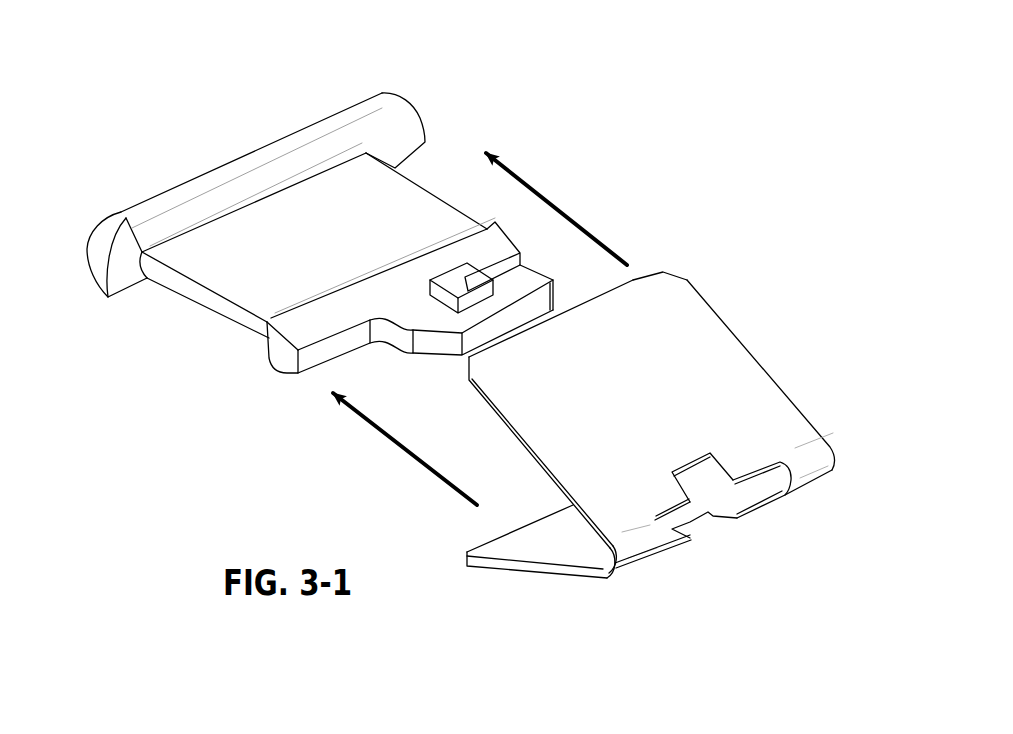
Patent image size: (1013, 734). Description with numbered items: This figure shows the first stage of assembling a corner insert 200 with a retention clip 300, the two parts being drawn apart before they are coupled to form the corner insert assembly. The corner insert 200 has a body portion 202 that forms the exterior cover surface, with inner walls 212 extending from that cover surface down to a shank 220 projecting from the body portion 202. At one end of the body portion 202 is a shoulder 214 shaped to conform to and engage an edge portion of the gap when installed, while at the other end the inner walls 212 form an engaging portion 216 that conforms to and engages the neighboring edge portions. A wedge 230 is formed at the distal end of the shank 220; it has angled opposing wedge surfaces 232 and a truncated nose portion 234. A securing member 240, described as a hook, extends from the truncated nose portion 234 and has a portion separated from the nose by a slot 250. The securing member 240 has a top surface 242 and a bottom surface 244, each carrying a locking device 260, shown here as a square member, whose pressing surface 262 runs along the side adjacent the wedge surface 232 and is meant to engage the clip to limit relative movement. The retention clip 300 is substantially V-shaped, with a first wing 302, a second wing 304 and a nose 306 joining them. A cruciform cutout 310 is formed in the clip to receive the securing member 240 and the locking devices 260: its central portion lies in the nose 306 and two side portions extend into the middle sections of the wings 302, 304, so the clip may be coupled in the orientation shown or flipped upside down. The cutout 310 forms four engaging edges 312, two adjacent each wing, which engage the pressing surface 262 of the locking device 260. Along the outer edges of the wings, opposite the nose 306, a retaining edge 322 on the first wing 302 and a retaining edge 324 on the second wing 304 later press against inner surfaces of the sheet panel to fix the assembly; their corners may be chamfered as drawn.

The corner insert 200 is at (83, 139).
The body portion 202 is at (271, 138).
The inner walls 212 is at (220, 193).
The shoulder 214 is at (122, 260).
The engaging portion 216 is at (413, 111).
The shank 220 is at (206, 322).
The wedge 230 is at (283, 360).
The wedge surfaces 232 is at (287, 378).
The truncated nose portion 234 is at (333, 347).
The securing member 240 is at (560, 277).
The top surface 242 is at (528, 257).
The bottom surface 244 is at (438, 357).
The slot 250 is at (537, 283).
The locking device 260 is at (460, 300).
The pressing surface 262 is at (443, 275).
The retention clip 300 is at (793, 365).
The first wing 302 is at (707, 323).
The second wing 304 is at (563, 555).
The nose 306 is at (820, 465).
The cutout 310 is at (749, 560).
The engaging edges 312 is at (755, 467).
The retaining edge 322 is at (647, 276).
The retaining edge 324 is at (500, 538).